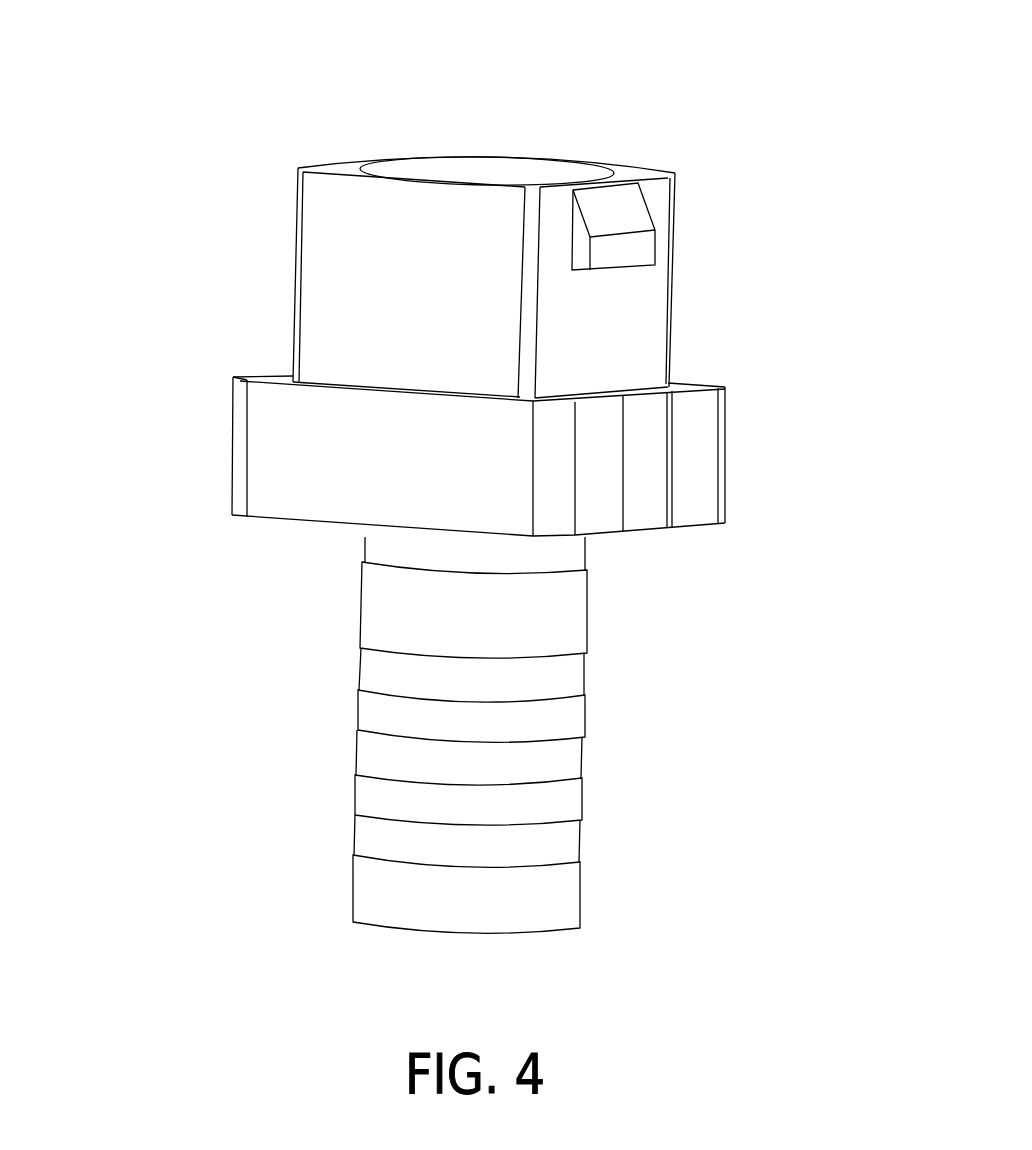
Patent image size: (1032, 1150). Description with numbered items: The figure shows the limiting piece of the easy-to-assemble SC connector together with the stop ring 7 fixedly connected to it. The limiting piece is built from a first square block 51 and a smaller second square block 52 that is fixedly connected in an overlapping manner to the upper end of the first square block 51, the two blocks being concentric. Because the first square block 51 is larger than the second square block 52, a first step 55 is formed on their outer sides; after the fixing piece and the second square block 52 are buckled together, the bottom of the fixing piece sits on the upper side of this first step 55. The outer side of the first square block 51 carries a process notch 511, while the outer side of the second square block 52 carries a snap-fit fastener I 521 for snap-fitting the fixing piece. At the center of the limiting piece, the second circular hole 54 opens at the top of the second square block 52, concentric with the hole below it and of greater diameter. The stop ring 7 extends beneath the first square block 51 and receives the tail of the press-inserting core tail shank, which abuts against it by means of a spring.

The stop ring 7 is at (415, 735).
The first square block 51 is at (377, 465).
The process notch 511 is at (648, 460).
The second square block 52 is at (360, 288).
The snap-fit fastener I 521 is at (625, 243).
The second circular hole 54 is at (484, 172).
The first step 55 is at (690, 387).